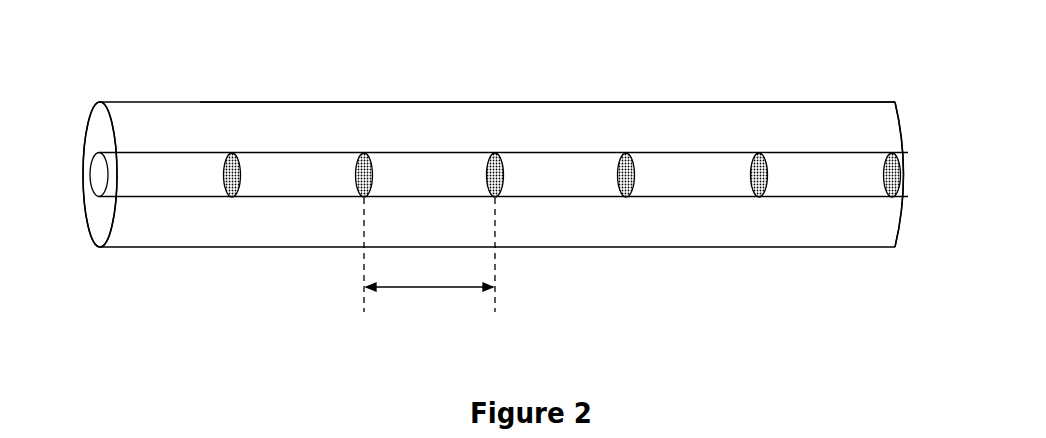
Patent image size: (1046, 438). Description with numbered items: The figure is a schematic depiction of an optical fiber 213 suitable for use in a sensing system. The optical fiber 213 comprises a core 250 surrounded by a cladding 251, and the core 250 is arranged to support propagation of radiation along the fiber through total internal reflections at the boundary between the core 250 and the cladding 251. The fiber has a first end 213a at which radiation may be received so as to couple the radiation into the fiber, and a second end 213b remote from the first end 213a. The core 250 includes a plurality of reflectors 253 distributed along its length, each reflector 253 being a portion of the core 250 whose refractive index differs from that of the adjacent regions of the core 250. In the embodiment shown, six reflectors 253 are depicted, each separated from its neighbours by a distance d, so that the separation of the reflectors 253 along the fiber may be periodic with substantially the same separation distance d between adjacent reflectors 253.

The optical fiber 213 is at (318, 77).
The first end 213a is at (98, 116).
The second end 213b is at (909, 118).
The core 250 is at (287, 152).
The cladding 251 is at (538, 102).
The reflectors 253 is at (225, 178).
The separation distance d is at (429, 258).